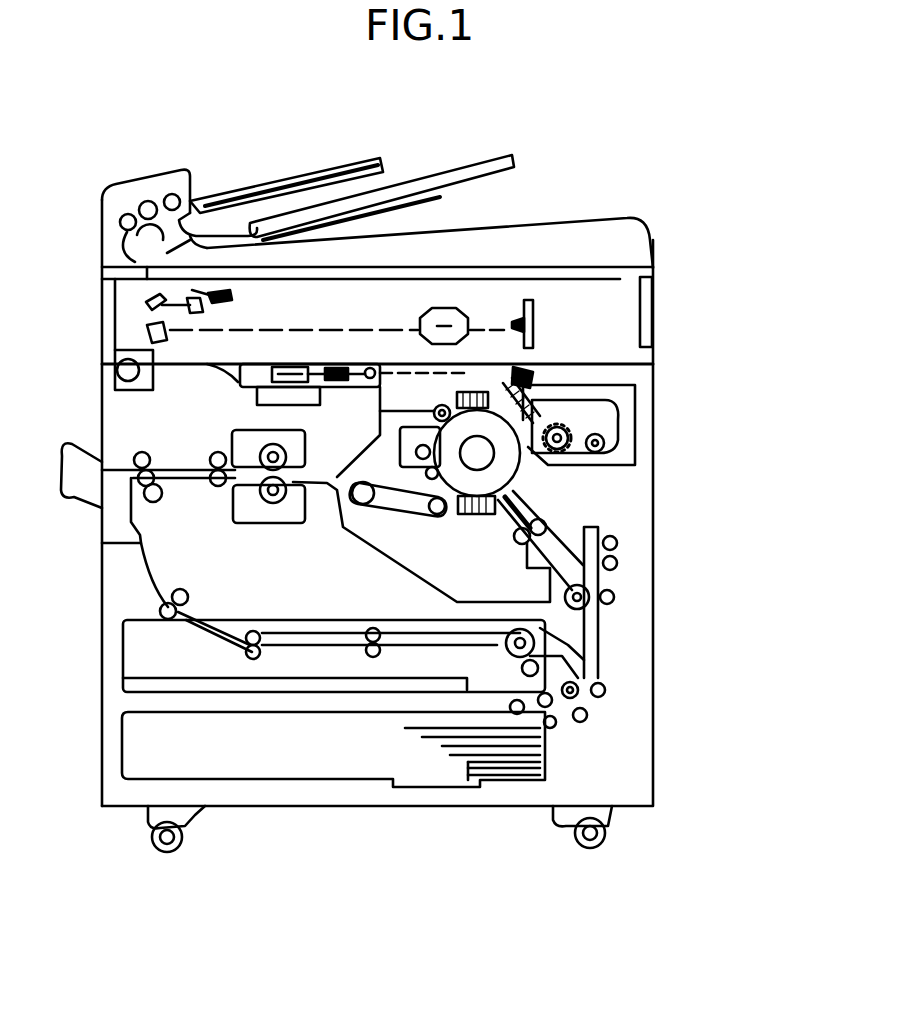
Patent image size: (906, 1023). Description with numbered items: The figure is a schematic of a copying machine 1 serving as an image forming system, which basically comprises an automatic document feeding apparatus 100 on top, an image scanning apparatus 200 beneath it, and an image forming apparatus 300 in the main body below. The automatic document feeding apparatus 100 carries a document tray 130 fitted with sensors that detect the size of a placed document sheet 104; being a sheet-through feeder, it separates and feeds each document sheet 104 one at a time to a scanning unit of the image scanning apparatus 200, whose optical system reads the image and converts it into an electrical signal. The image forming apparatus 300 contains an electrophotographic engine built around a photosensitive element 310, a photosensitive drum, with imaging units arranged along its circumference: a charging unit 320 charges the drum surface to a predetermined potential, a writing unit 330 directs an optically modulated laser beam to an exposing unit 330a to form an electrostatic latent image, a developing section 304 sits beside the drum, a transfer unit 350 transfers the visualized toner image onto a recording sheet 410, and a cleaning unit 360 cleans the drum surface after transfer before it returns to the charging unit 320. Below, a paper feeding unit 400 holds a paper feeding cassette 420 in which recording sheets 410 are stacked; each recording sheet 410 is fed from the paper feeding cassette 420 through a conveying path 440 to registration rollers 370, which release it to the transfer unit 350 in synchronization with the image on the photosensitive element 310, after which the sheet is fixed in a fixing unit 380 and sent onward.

The copying machine 1 is at (600, 171).
The automatic document feeding apparatus 100 is at (650, 227).
The document sheet 104 is at (372, 156).
The document tray 130 is at (512, 154).
The image scanning apparatus 200 is at (656, 344).
The image forming apparatus 300 is at (619, 480).
The developing device 304 is at (613, 410).
The photosensitive element 310 is at (520, 482).
The charging unit 320 is at (438, 389).
The writing unit 330 is at (240, 381).
The exposing unit 330a is at (537, 349).
The transfer unit 350 is at (478, 513).
The cleaning unit 360 is at (360, 507).
The registration rollers 370 is at (524, 546).
The fixing unit 380 is at (275, 524).
The paper feeding unit 400 is at (617, 657).
The recording sheet 410 is at (466, 763).
The paper feeding cassette 420 is at (540, 752).
The conveying path 440 is at (596, 636).